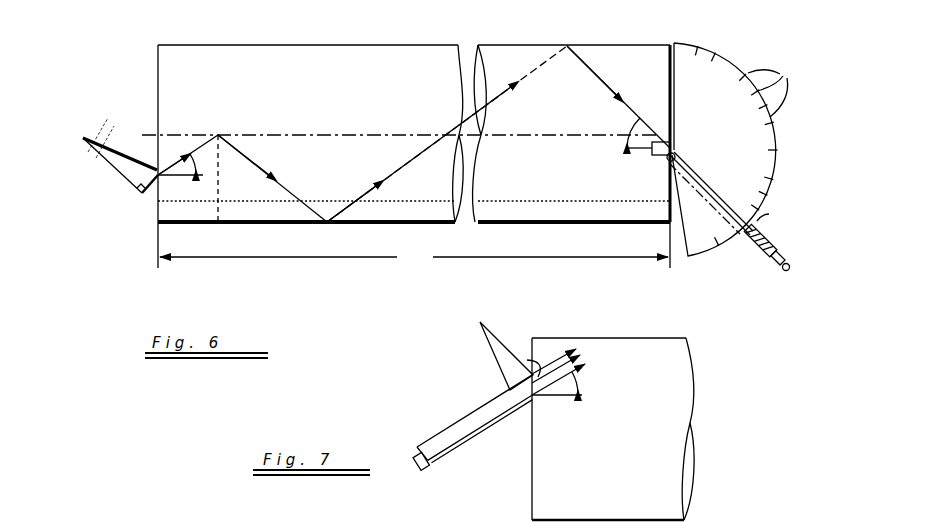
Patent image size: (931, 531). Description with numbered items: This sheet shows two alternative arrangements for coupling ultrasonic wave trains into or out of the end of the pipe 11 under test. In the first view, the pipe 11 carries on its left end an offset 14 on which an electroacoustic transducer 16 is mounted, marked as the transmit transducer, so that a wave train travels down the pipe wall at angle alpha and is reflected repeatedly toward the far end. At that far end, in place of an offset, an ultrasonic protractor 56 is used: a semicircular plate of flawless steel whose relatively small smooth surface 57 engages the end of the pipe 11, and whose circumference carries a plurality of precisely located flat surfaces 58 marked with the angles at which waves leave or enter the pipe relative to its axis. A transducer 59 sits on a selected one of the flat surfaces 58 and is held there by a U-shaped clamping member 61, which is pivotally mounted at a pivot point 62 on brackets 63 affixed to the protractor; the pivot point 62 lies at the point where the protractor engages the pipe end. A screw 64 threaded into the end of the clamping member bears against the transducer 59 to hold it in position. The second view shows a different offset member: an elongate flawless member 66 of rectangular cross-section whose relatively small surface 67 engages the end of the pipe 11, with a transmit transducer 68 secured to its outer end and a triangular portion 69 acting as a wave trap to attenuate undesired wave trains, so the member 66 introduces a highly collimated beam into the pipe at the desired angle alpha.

In FIG. 6, the pipe 11 is at (500, 52).
In FIG. 7, the pipe 11 is at (652, 348).
In FIG. 6, the offset 14 is at (109, 171).
In FIG. 6, the electroacoustic transducer 16 is at (98, 179).
In FIG. 6, the ultrasonic protractor 56 is at (727, 58).
In FIG. 6, the small smooth surface 57 is at (668, 163).
In FIG. 6, the flat surfaces 58 is at (771, 87).
In FIG. 6, the transducer 59 is at (742, 230).
In FIG. 6, the U-shaped clamping member 61 is at (713, 181).
In FIG. 6, the pivot point 62 is at (675, 151).
In FIG. 6, the brackets 63 is at (656, 135).
In FIG. 6, the screw 64 is at (783, 272).
In FIG. 7, the elongate flawless member 66 is at (487, 420).
In FIG. 7, the small surface 67 is at (535, 368).
In FIG. 7, the transmit transducer 68 is at (411, 460).
In FIG. 7, the triangular portion 69 is at (497, 342).